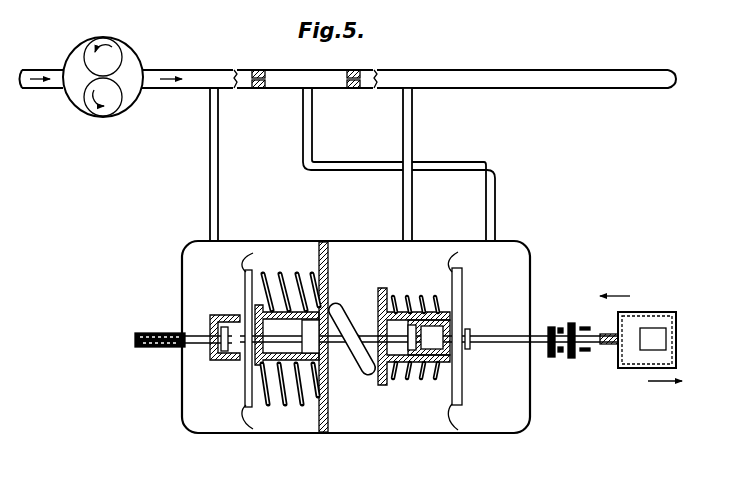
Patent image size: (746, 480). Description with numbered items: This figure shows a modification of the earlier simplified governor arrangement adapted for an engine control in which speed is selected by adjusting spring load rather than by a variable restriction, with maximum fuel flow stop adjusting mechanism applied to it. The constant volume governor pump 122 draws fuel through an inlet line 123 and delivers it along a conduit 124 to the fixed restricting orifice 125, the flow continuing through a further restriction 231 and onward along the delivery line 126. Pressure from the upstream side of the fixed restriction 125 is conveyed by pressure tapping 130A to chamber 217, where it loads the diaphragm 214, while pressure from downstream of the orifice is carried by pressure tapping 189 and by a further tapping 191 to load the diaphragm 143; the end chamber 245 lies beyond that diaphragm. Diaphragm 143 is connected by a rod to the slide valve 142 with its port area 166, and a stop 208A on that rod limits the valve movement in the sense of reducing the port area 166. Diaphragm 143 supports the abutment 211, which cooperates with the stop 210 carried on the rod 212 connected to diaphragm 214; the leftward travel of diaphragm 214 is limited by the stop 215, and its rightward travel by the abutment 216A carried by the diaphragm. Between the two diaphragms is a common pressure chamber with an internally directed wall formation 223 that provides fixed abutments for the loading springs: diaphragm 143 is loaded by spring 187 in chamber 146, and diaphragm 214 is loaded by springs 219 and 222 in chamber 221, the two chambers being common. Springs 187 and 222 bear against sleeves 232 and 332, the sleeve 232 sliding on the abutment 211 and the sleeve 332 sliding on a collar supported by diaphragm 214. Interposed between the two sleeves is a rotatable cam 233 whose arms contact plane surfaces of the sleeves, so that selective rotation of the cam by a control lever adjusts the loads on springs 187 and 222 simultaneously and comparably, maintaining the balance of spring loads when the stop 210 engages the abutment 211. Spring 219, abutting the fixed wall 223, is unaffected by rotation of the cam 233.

The constant volume governor pump 122 is at (113, 58).
The inlet conduit 123 is at (43, 91).
The conduit 124 is at (207, 78).
The fixed restricting orifice 125 is at (261, 72).
The outlet conduit 126 is at (541, 78).
The second restriction orifice 231 is at (357, 72).
The pressure conduit 191 is at (413, 121).
The pressure tapping 189 is at (304, 163).
The pressure tapping 130A is at (211, 192).
The chamber 217 is at (195, 259).
The chamber 245 is at (500, 268).
The spring 187 is at (450, 405).
The wall formation 223 is at (327, 262).
The stop 215 is at (143, 330).
The rod 212 is at (367, 375).
The abutment 216A is at (212, 356).
The diaphragm 214 is at (246, 387).
The chamber 221 is at (275, 262).
The spring 219 is at (286, 278).
The spring 222 is at (286, 402).
The sleeve 332 is at (298, 396).
The rotatable cam 233 is at (350, 300).
The stop 210 is at (409, 383).
The abutment 211 is at (393, 385).
The sleeve 232 is at (414, 308).
The chamber 146 is at (392, 293).
The diaphragm 143 is at (467, 392).
The stop 208A is at (570, 324).
The slide valve 142 is at (623, 312).
The port area 166 is at (652, 350).